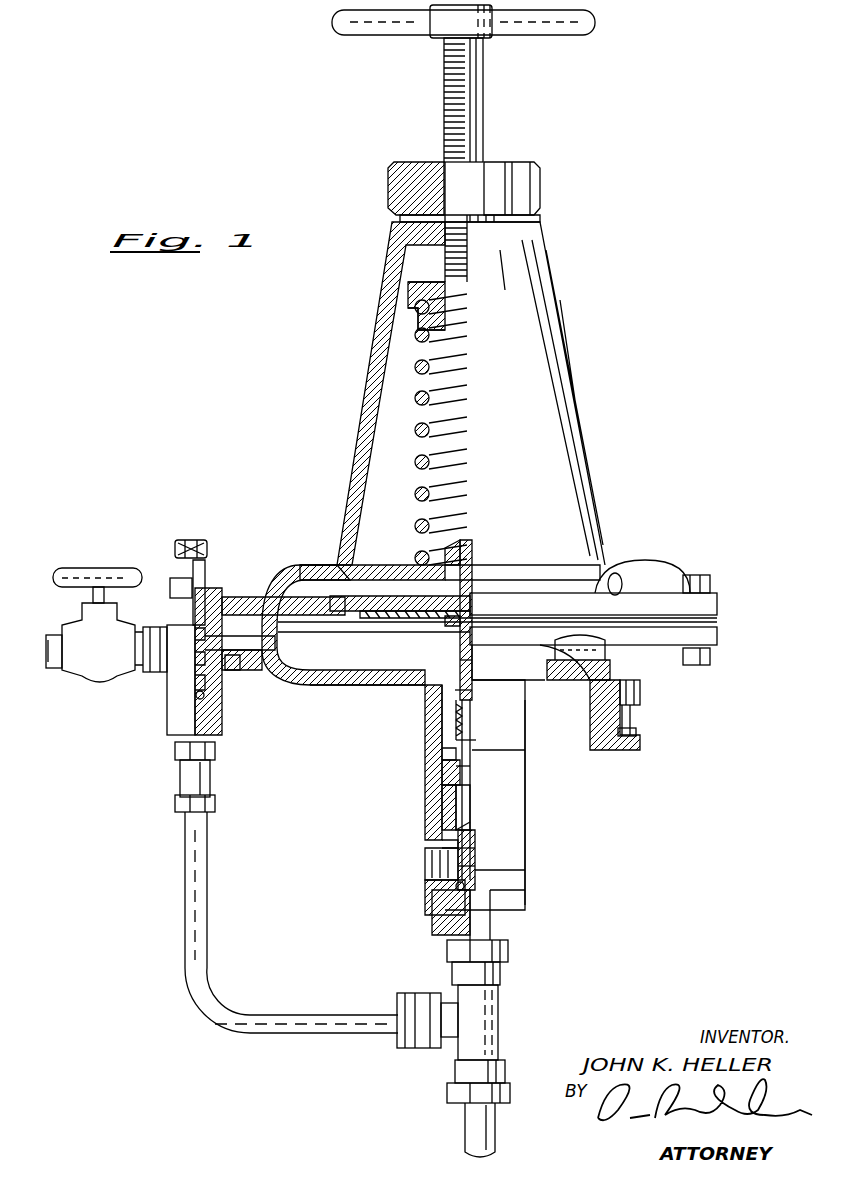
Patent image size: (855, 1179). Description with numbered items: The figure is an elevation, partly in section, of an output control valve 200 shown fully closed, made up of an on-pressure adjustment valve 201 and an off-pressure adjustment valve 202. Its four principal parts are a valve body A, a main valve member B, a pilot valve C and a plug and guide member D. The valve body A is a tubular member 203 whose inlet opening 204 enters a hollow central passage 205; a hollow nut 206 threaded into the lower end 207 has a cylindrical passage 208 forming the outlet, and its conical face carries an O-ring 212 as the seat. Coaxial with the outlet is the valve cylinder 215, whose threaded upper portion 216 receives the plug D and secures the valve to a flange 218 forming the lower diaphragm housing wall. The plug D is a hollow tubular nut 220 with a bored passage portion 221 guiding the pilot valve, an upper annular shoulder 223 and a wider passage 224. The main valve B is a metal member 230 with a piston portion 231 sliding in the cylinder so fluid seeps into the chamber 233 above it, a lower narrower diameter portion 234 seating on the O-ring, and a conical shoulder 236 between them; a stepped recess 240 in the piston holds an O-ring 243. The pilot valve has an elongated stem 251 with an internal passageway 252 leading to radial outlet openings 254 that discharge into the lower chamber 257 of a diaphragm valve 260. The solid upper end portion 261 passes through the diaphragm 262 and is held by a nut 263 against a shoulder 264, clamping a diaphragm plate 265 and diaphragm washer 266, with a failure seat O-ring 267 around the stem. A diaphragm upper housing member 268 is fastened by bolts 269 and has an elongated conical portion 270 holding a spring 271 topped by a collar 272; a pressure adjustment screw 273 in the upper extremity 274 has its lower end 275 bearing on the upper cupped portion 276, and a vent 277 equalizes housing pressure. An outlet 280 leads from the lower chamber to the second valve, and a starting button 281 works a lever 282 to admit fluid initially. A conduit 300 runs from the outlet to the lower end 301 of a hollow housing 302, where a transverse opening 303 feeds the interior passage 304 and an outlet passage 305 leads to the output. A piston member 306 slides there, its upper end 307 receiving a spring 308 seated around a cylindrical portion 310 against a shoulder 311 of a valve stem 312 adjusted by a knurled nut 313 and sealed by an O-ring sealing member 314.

The output control valve 200 is at (232, 681).
The on-pressure adjustment valve 201 is at (538, 912).
The off-pressure adjustment valve 202 is at (161, 719).
The tubular member 203 is at (527, 888).
The inlet opening 204 is at (430, 867).
The hollow central passage 205 is at (470, 854).
The hollow nut 206 is at (435, 928).
The lower end of body 207 is at (430, 905).
The cylindrical passage 208 is at (476, 904).
The O-ring 212 is at (466, 884).
The valve cylinder 215 is at (430, 828).
The threaded upper portion 216 is at (425, 715).
The flange 218 is at (365, 685).
The hollow tubular nut 220 is at (472, 640).
The bored passage portion 221 is at (480, 668).
The upper annular shoulder 223 is at (472, 690).
The wider passage 224 is at (475, 718).
The metal member 230 is at (468, 840).
The piston portion 231 is at (445, 797).
The chamber 233 is at (440, 752).
The lower narrower diameter portion 234 is at (475, 876).
The conical shoulder 236 is at (466, 826).
The stepped recess 240 is at (462, 806).
The O-ring 243 is at (468, 782).
The elongated stem 251 is at (472, 740).
The passageway 252 is at (476, 758).
The radial outlet openings 254 is at (593, 602).
The lower chamber 257 is at (340, 651).
The diaphragm valve 260 is at (612, 560).
The solid upper end portion 261 is at (478, 590).
The diaphragm 262 is at (374, 606).
The nut 263 is at (470, 548).
The shoulder 264 is at (500, 620).
The diaphragm plate 265 is at (474, 580).
The diaphragm washer 266 is at (472, 615).
The failure seat O-ring 267 is at (455, 622).
The diaphragm upper housing member 268 is at (318, 565).
The bolts 269 is at (712, 582).
The elongated conical portion 270 is at (358, 425).
The spring 271 is at (452, 425).
The collar 272 is at (430, 287).
The pressure adjustment screw 273 is at (470, 142).
The upper extremity 274 is at (464, 192).
The lower end of screw 275 is at (462, 292).
The upper cupped portion 276 is at (462, 302).
The vent 277 is at (640, 584).
The outlet 280 is at (280, 685).
The starting button 281 is at (630, 722).
The lever 282 is at (593, 635).
The conduit 300 is at (232, 1006).
The lower end of housing 301 is at (210, 742).
The hollow housing 302 is at (132, 688).
The transverse opening 303 is at (240, 677).
The interior passage 304 is at (200, 645).
The outlet passage 305 is at (152, 628).
The piston member 306 is at (196, 724).
The upper end of piston 307 is at (197, 683).
The spring 308 is at (200, 688).
The cylindrical portion 310 is at (200, 660).
The shoulder 311 is at (196, 634).
The valve stem 312 is at (196, 620).
The knurled nut 313 is at (205, 548).
The O-ring sealing member 314 is at (216, 606).
The valve body A is at (539, 847).
The main valve member B is at (475, 876).
The pilot valve C is at (477, 772).
The plug and guide member D is at (470, 668).